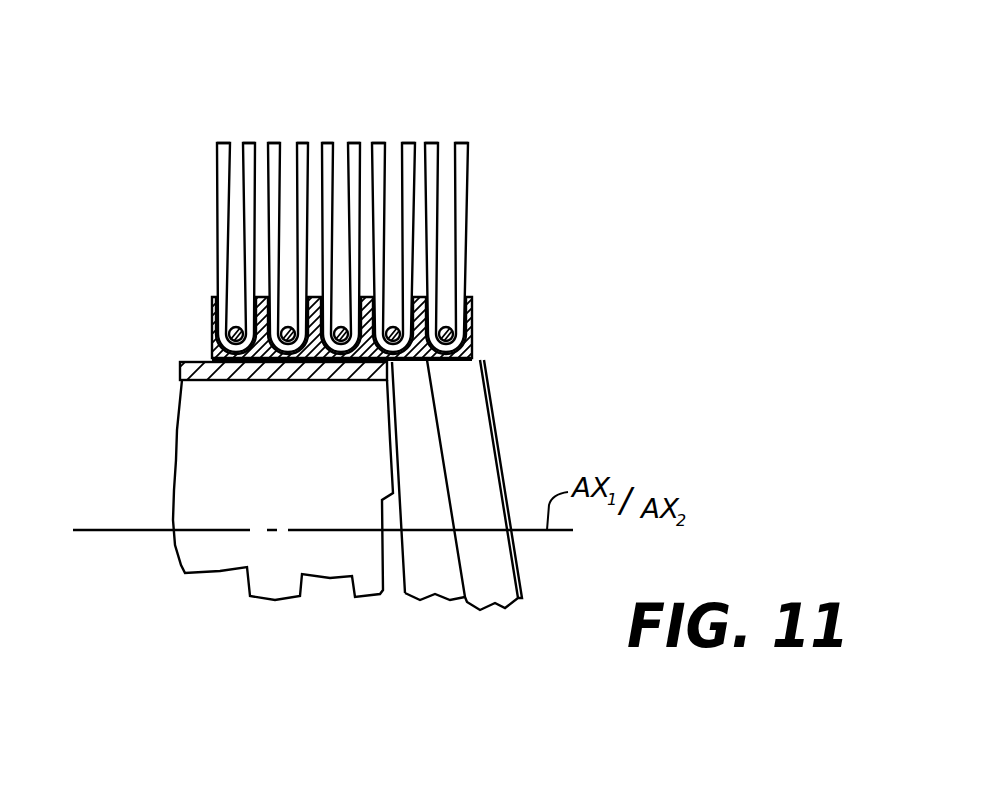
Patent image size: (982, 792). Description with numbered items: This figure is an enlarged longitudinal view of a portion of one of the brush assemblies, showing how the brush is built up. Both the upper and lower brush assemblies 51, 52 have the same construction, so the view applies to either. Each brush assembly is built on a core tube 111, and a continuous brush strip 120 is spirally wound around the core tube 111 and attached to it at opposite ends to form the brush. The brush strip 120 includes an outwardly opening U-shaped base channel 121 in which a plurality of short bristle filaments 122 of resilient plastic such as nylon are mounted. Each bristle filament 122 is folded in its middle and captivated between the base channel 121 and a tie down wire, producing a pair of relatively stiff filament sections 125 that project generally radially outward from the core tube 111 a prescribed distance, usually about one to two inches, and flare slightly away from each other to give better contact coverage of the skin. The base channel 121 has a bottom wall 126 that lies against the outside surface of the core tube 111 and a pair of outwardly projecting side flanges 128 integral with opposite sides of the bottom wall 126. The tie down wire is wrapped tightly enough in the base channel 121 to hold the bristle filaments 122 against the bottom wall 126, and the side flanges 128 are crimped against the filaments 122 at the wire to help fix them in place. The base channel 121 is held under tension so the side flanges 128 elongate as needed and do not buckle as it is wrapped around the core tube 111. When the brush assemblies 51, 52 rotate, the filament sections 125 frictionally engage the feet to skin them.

The filament sections 125 is at (246, 183).
The bristle filaments 122 is at (326, 248).
The side flanges 128 is at (220, 296).
The base channel 121 is at (488, 333).
The core tube 111 is at (184, 361).
The bottom wall 126 is at (347, 364).
The brush strip 120 is at (494, 410).
The upper brush assembly 51 is at (238, 490).
The lower brush assembly 52 is at (176, 460).